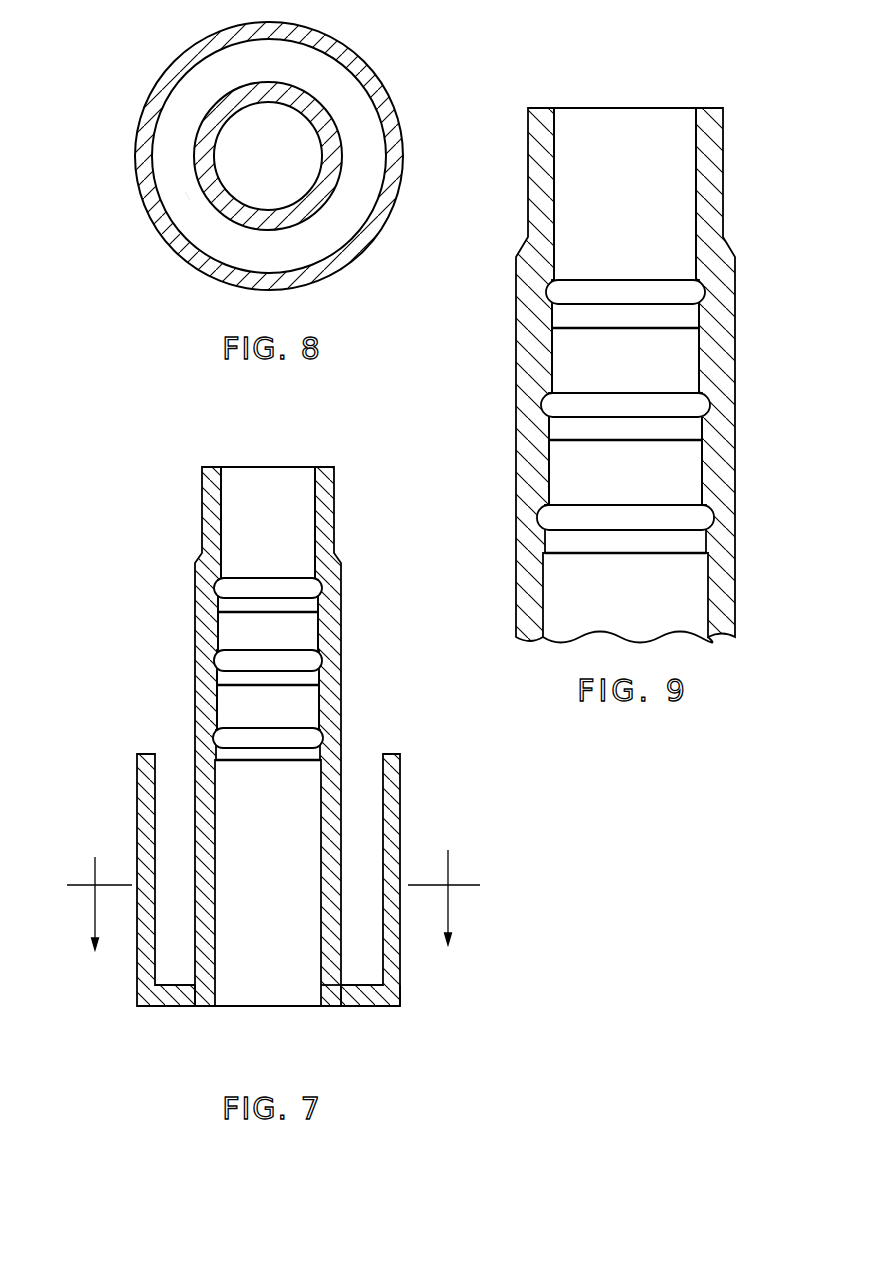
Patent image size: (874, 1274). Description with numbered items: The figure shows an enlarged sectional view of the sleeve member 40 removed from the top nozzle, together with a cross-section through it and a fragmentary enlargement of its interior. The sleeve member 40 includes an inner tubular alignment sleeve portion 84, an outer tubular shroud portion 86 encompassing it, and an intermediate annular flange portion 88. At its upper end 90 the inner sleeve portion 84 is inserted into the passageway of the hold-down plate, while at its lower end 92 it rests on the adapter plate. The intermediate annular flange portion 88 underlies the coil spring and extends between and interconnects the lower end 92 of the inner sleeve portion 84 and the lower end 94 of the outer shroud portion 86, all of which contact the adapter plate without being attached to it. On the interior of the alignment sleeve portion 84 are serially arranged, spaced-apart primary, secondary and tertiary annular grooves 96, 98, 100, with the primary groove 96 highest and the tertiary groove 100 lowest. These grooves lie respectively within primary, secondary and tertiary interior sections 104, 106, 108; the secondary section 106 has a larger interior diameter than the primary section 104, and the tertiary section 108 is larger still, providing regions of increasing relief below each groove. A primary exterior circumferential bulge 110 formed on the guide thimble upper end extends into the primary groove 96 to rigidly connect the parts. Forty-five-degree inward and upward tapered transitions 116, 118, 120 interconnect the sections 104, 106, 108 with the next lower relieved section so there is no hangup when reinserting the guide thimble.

In FIG. 8, the sleeve member 40 is at (104, 117).
In FIG. 7, the sleeve member 40 is at (122, 520).
In FIG. 9, the sleeve member 40 is at (736, 58).
In FIG. 8, the inner tubular alignment sleeve portion 84 is at (320, 81).
In FIG. 7, the inner tubular alignment sleeve portion 84 is at (257, 722).
In FIG. 9, the inner tubular alignment sleeve portion 84 is at (615, 344).
In FIG. 8, the outer tubular shroud portion 86 is at (170, 52).
In FIG. 7, the outer tubular shroud portion 86 is at (411, 790).
In FIG. 8, the intermediate annular flange portion 88 is at (183, 202).
In FIG. 7, the intermediate annular flange portion 88 is at (363, 1017).
In FIG. 7, the upper end 90 is at (202, 478).
In FIG. 9, the upper end 90 is at (711, 108).
In FIG. 7, the lower end 92 is at (323, 988).
In FIG. 7, the lower end 94 is at (401, 991).
In FIG. 7, the primary annular groove 96 is at (220, 588).
In FIG. 9, the primary annular groove 96 is at (548, 293).
In FIG. 7, the secondary annular groove 98 is at (220, 662).
In FIG. 9, the secondary annular groove 98 is at (545, 405).
In FIG. 9, the tertiary annular groove 100 is at (541, 517).
In FIG. 7, the primary interior section 104 is at (210, 539).
In FIG. 9, the primary interior section 104 is at (536, 204).
In FIG. 7, the secondary interior section 106 is at (201, 637).
In FIG. 9, the secondary interior section 106 is at (522, 366).
In FIG. 7, the tertiary interior section 108 is at (204, 714).
In FIG. 9, the tertiary interior section 108 is at (530, 473).
In FIG. 7, the primary exterior circumferential bulge 110 is at (216, 740).
In FIG. 7, the tapered transition 116 is at (320, 612).
In FIG. 9, the tapered transition 116 is at (550, 327).
In FIG. 7, the tapered transition 118 is at (320, 686).
In FIG. 9, the tapered transition 118 is at (548, 440).
In FIG. 7, the tapered transition 120 is at (322, 758).
In FIG. 9, the tapered transition 120 is at (547, 553).